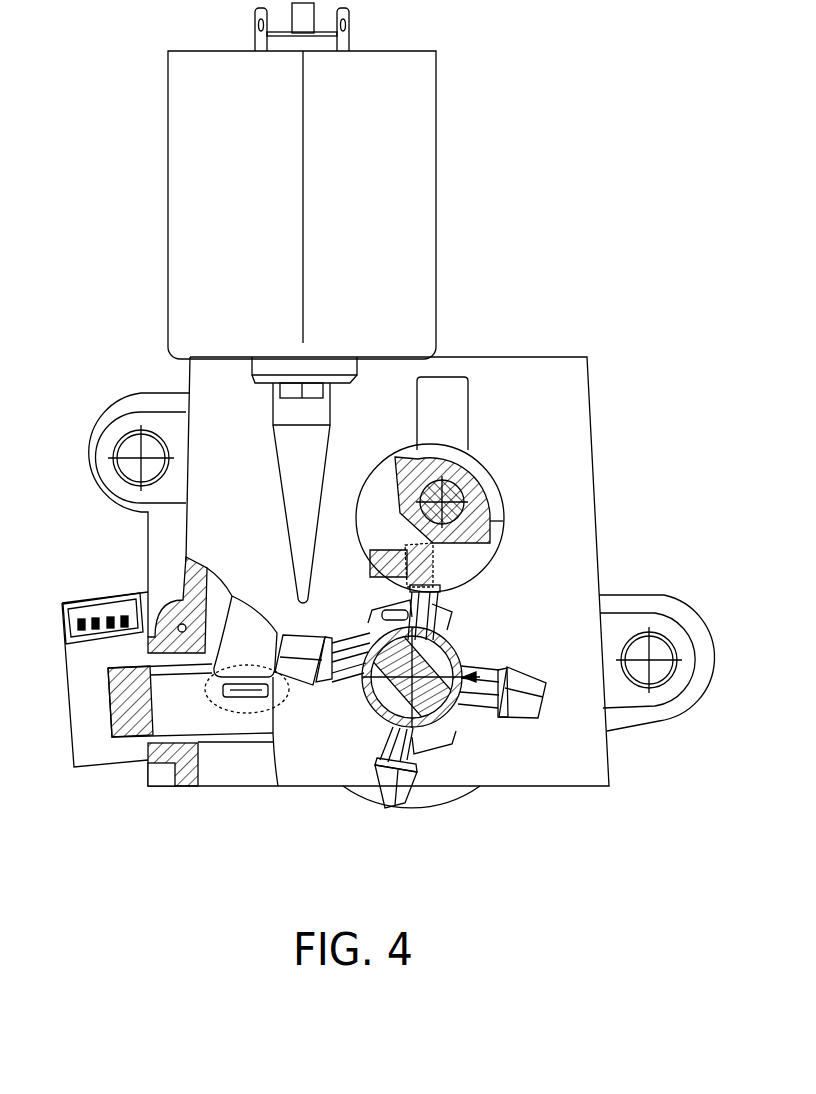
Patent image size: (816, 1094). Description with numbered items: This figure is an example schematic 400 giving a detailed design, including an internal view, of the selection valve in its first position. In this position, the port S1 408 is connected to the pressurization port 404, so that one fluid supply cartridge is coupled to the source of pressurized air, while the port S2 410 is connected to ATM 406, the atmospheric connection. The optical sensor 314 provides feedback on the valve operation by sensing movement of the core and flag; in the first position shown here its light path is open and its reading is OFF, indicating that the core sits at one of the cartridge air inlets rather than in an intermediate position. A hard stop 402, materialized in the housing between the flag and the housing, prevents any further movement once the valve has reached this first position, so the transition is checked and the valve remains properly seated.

The schematic 400 is at (365, 470).
The hard stop 402 is at (452, 562).
The pressurization port 404 is at (455, 596).
The ATM 406 is at (368, 808).
The S1 408 is at (556, 673).
The S2 410 is at (313, 629).
The optical sensor 314 is at (190, 692).